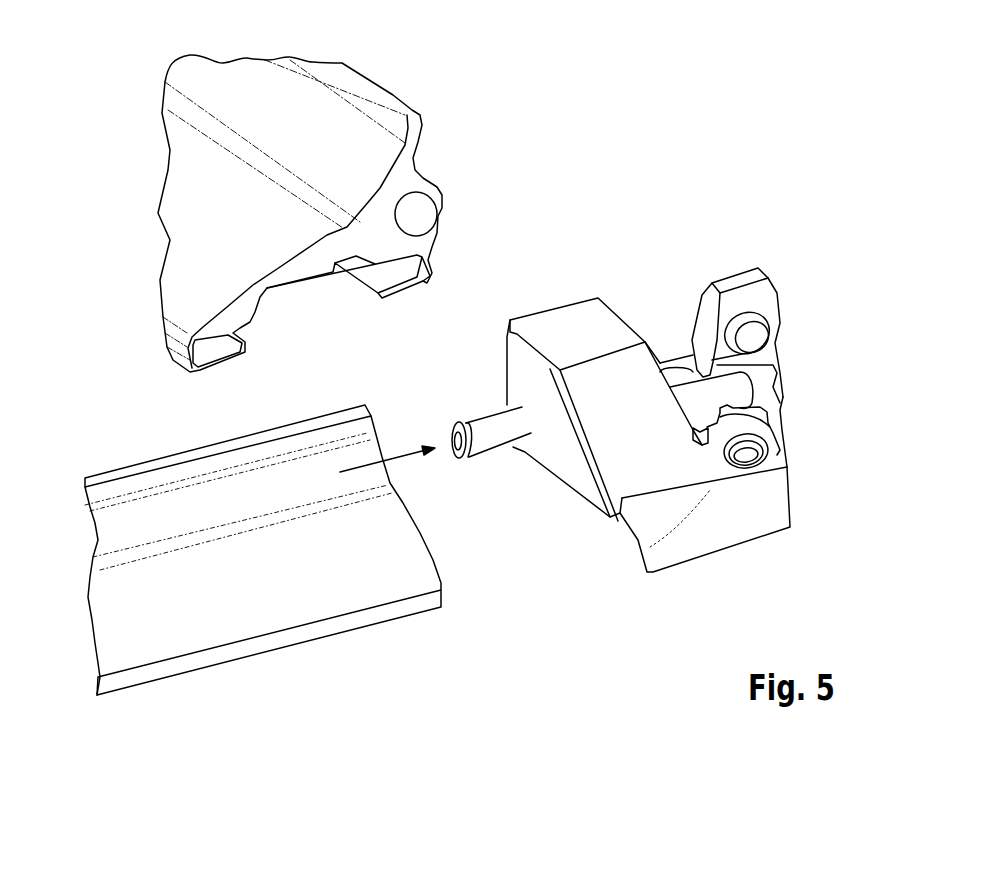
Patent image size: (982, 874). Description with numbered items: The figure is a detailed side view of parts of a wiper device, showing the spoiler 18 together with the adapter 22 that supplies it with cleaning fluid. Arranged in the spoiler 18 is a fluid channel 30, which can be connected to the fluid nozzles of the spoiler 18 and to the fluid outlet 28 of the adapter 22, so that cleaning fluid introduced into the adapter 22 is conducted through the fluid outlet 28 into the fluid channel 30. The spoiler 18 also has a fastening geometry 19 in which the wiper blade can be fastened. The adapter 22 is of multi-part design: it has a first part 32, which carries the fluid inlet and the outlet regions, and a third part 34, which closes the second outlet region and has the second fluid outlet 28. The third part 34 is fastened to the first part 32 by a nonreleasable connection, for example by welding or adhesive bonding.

The spoiler 18 is at (308, 112).
The fastening geometry 19 is at (318, 307).
The adapter 22 is at (723, 528).
The second fluid outlet 28 is at (483, 425).
The fluid channel 30 is at (421, 213).
The first part 32 is at (772, 455).
The third part 34 is at (560, 447).